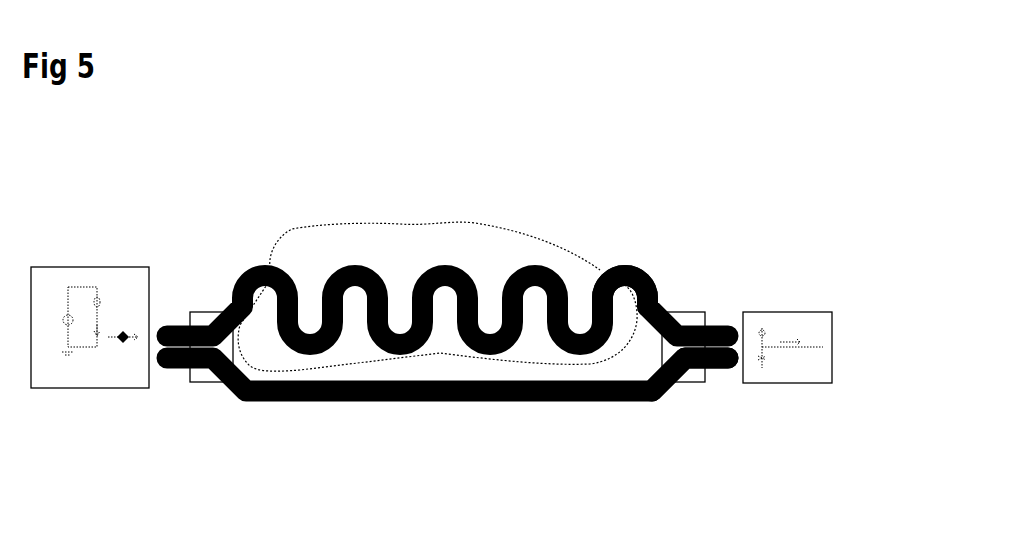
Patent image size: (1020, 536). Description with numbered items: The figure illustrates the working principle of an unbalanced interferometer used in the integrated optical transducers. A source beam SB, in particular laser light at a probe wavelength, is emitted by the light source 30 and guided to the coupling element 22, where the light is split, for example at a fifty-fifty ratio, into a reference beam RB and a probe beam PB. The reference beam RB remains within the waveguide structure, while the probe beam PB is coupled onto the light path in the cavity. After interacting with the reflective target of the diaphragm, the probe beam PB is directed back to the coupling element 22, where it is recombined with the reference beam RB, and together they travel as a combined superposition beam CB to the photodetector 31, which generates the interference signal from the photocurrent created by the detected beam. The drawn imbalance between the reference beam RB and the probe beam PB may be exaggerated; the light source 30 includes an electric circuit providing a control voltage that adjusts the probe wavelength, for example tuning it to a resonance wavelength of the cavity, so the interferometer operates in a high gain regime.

The light source 30 is at (126, 283).
The photodetector 31 is at (823, 320).
The coupling element 22 is at (216, 382).
The source beam SB is at (170, 362).
The probe beam PB is at (650, 275).
The reference beam RB is at (444, 394).
The combined superposition beam CB is at (712, 368).
The element cavity is at (437, 296).